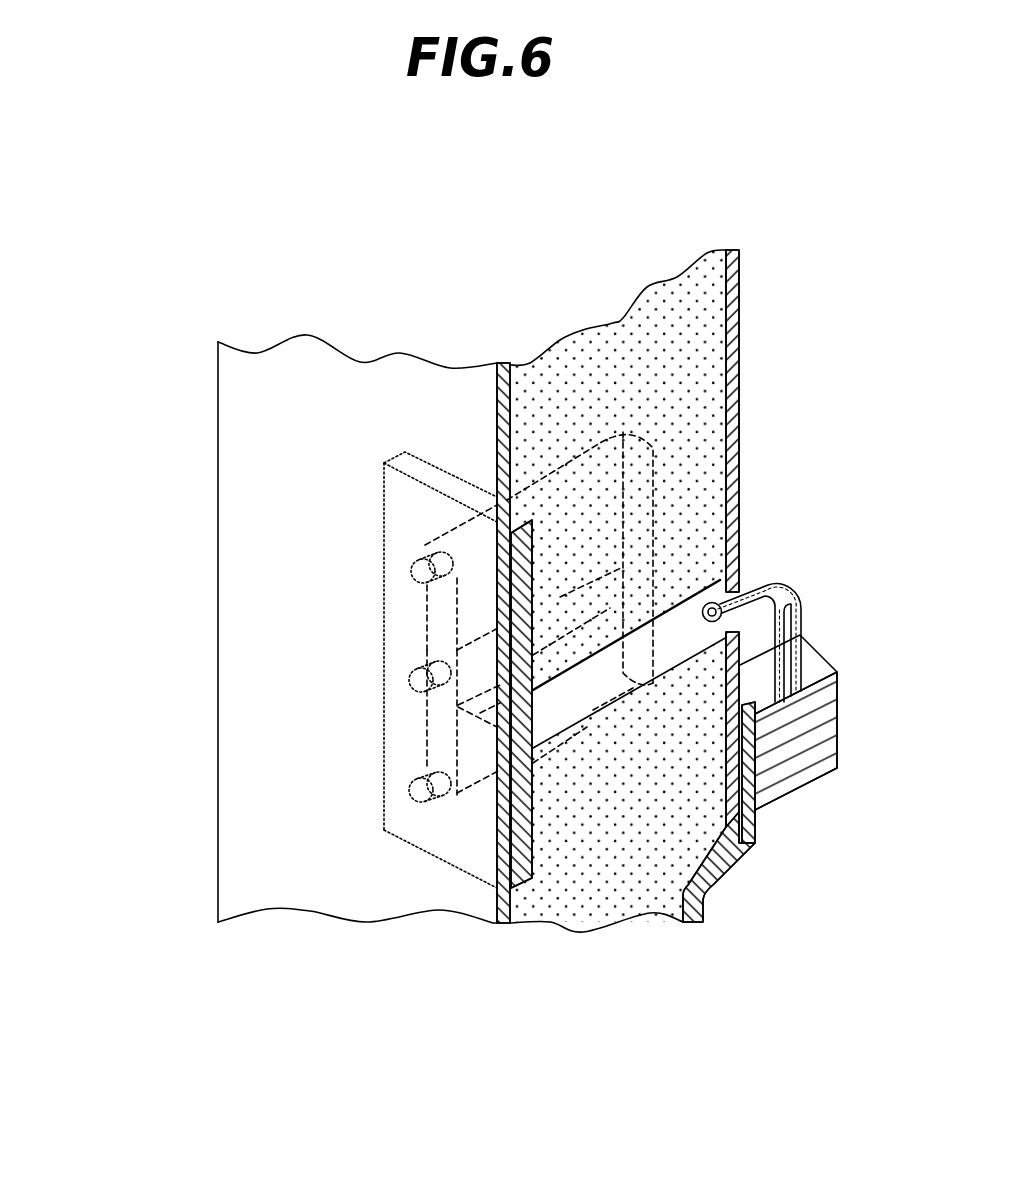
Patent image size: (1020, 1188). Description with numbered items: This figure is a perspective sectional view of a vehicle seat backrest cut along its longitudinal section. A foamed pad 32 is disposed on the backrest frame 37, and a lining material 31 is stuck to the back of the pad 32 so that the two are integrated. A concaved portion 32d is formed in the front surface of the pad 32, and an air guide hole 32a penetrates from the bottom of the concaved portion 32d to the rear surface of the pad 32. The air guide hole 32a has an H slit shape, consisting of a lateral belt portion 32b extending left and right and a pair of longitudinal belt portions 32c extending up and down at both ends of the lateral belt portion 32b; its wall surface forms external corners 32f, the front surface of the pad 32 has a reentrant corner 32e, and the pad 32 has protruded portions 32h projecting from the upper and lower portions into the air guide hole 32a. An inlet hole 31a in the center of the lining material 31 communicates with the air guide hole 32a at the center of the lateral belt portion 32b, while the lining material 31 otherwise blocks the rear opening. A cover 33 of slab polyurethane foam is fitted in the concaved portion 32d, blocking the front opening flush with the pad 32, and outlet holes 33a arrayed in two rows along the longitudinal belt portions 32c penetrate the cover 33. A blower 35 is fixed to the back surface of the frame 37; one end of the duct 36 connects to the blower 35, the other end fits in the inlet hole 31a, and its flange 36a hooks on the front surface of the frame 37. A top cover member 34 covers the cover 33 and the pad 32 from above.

The lining material 31 is at (740, 477).
The inlet hole 31a is at (740, 600).
The pad 32 is at (607, 895).
The air guide hole 32a is at (568, 700).
The lateral belt portion 32b is at (480, 713).
The longitudinal belt portion 32c is at (437, 623).
The concaved portion 32d is at (437, 703).
The reentrant corner 32e is at (458, 705).
The external corner 32f is at (467, 649).
The protruded portion 32h is at (470, 740).
The cover 33 is at (400, 493).
The outlet hole 33a is at (412, 570).
The top cover member 34 is at (410, 888).
The blower 35 is at (822, 748).
The duct 36 is at (783, 583).
The flange 36a is at (708, 603).
The frame 37 is at (748, 843).